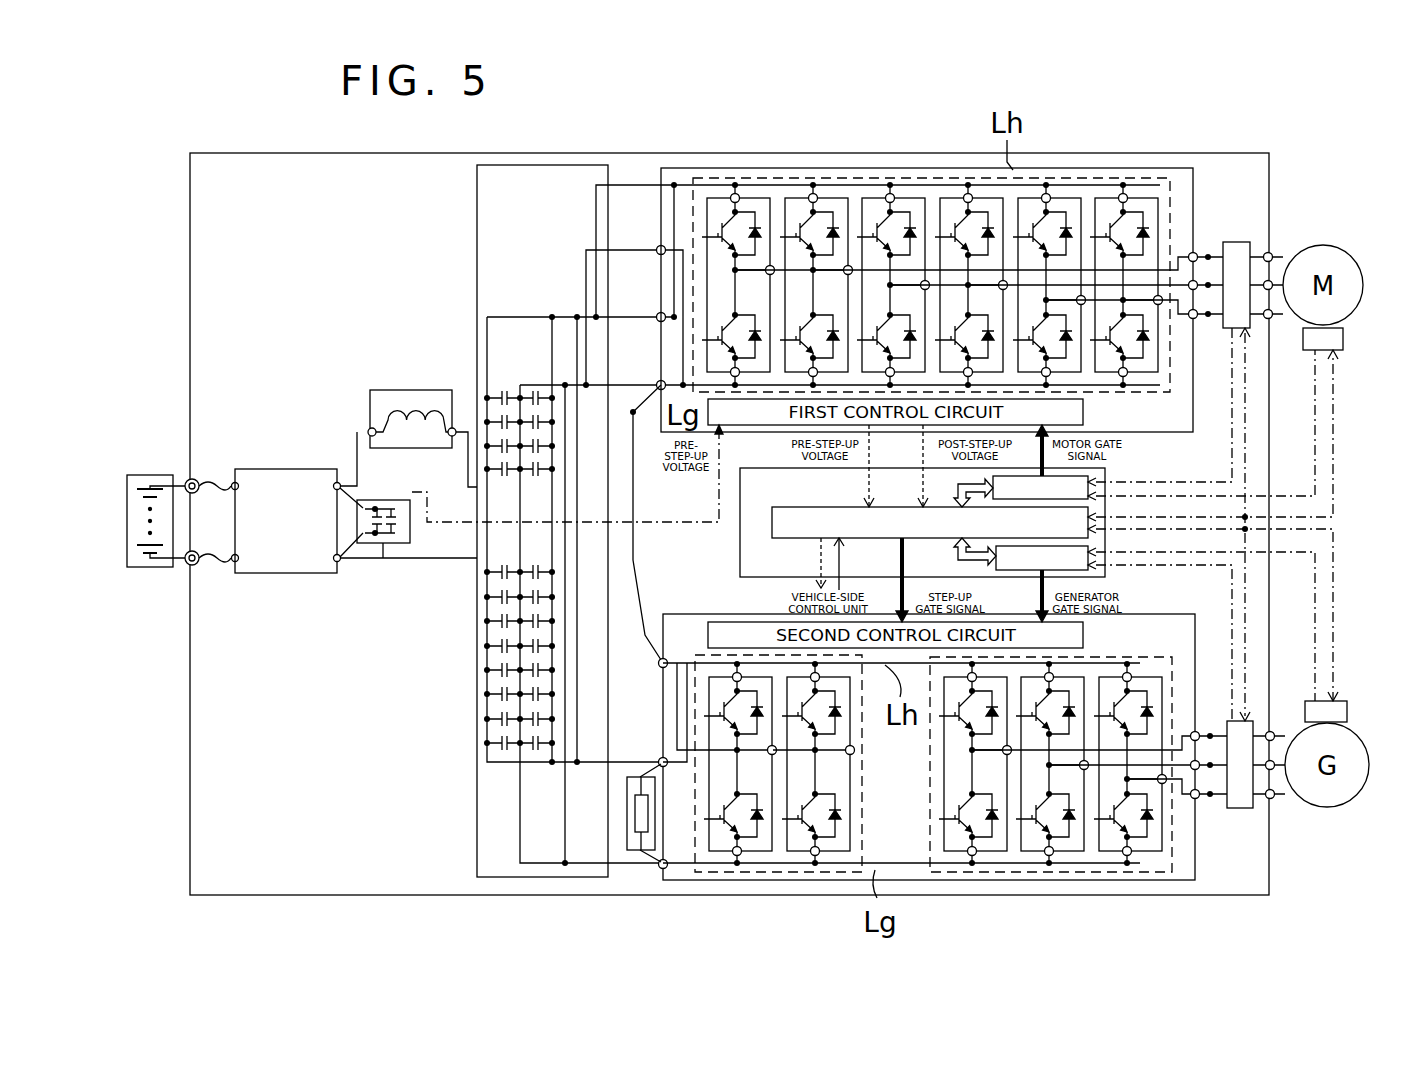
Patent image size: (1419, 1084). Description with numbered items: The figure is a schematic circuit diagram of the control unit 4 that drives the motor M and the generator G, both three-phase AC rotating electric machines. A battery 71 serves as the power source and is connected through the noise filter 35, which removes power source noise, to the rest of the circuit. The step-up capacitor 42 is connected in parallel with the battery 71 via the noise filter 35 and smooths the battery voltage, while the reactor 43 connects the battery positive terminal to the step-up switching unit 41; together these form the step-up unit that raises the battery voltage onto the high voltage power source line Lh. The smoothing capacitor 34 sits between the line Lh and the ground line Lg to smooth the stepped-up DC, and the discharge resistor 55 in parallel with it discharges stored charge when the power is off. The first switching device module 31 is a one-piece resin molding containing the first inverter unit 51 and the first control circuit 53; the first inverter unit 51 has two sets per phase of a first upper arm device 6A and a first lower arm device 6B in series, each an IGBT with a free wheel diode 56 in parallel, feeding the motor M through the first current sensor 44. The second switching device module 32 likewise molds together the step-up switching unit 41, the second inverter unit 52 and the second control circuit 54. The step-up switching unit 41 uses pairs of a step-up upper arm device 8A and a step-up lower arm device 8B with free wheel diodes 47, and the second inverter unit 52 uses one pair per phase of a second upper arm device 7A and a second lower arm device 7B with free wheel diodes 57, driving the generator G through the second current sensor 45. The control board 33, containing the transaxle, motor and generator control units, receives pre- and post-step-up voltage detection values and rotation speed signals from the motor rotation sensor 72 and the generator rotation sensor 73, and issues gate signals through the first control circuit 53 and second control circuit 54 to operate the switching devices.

The control unit 4 is at (188, 172).
The battery 71 is at (148, 475).
The noise filter 35 is at (285, 469).
The reactor 43 is at (428, 390).
The step-up capacitor 42 is at (382, 543).
The smoothing capacitor 34 is at (477, 228).
The first switching device module 31 is at (1195, 432).
The first inverter unit 51 is at (1180, 180).
The first upper arm device 6A is at (715, 232).
The first lower arm device 6B is at (1100, 402).
The free wheel diode 56 is at (752, 325).
The first control circuit 53 is at (780, 427).
The control board 33 is at (740, 545).
The second switching device module 32 is at (672, 612).
The second control circuit 54 is at (735, 622).
The discharge resistor 55 is at (627, 815).
The step-up switching unit 41 is at (872, 787).
The second inverter unit 52 is at (1180, 870).
The step-up upper arm device 8A is at (720, 714).
The step-up lower arm device 8B is at (720, 818).
The free wheel diode 47 is at (759, 718).
The second upper arm device 7A is at (955, 714).
The second lower arm device 7B is at (957, 822).
The free wheel diode 57 is at (993, 718).
The first current sensor 44 is at (1236, 242).
The motor rotation sensor 72 is at (1303, 348).
The second current sensor 45 is at (1240, 808).
The generator rotation sensor 73 is at (1308, 701).